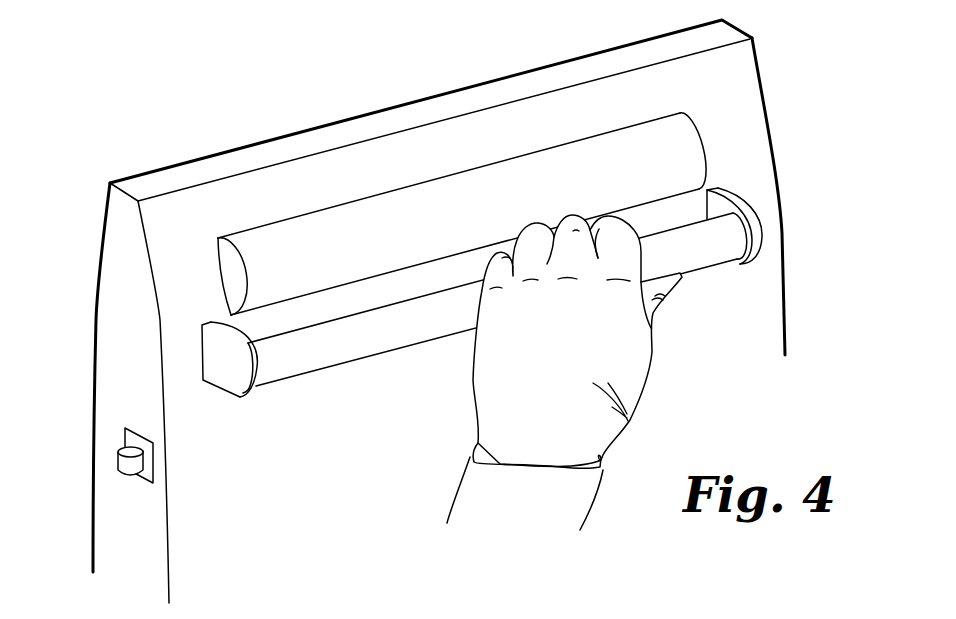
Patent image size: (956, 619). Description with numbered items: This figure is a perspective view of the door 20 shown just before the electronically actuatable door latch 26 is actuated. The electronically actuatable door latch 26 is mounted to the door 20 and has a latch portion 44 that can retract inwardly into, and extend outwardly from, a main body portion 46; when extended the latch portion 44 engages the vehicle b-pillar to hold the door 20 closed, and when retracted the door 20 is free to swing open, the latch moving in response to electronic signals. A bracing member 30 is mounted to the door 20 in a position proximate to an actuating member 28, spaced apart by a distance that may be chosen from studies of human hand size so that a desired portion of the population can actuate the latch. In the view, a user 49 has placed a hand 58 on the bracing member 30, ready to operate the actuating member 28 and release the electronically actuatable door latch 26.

The door 20 is at (756, 146).
The electronically actuatable door latch 26 is at (134, 462).
The actuating member 28 is at (282, 233).
The bracing member 30 is at (355, 348).
The latch portion 44 is at (125, 465).
The main body portion 46 is at (147, 483).
The user 49 is at (473, 498).
The hand 58 is at (623, 368).